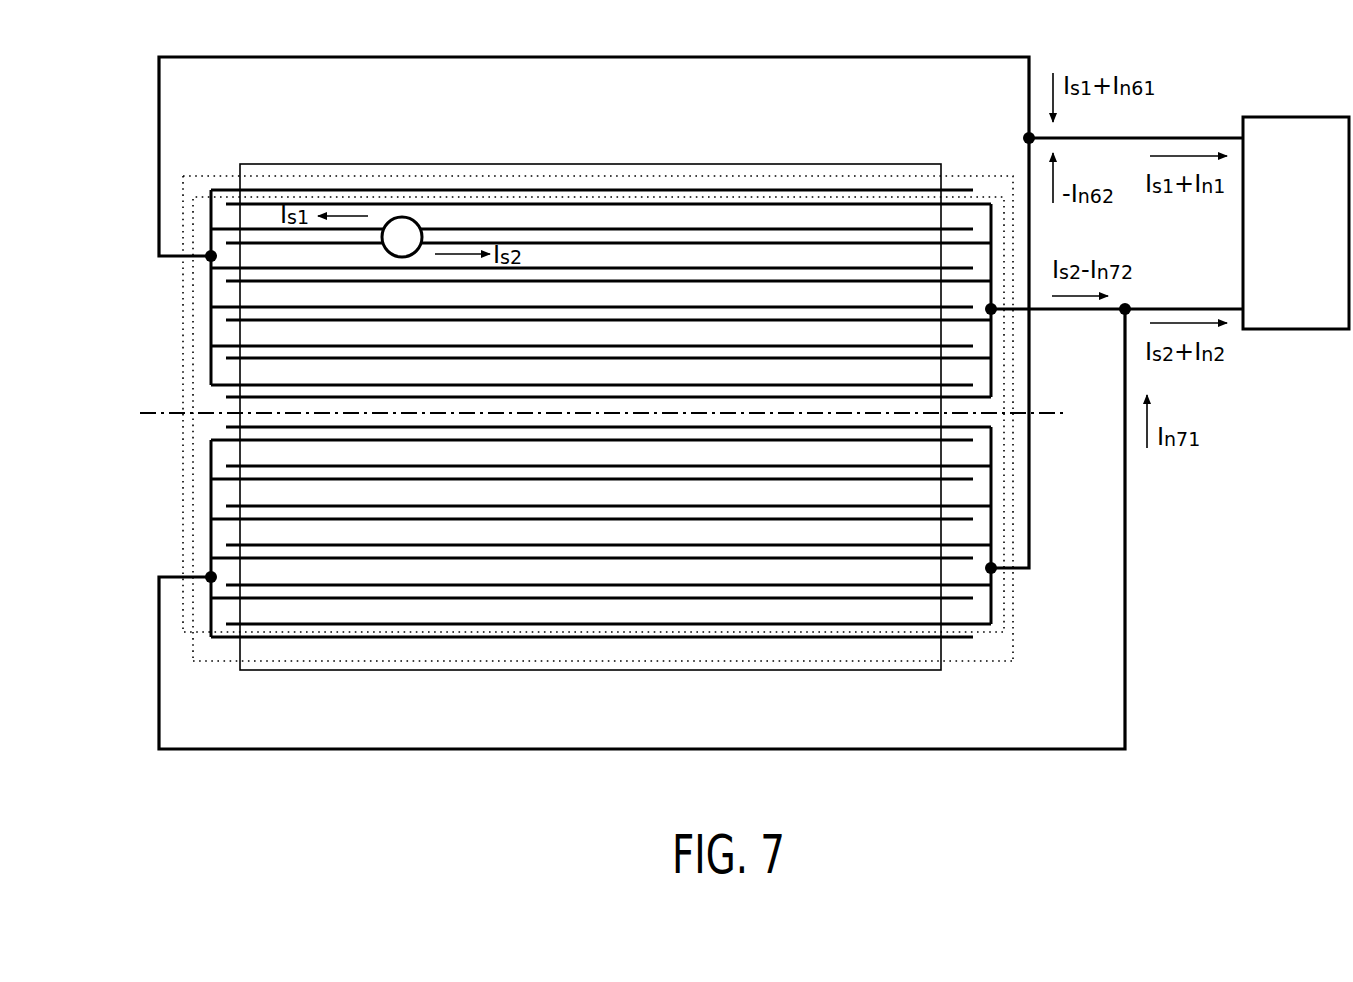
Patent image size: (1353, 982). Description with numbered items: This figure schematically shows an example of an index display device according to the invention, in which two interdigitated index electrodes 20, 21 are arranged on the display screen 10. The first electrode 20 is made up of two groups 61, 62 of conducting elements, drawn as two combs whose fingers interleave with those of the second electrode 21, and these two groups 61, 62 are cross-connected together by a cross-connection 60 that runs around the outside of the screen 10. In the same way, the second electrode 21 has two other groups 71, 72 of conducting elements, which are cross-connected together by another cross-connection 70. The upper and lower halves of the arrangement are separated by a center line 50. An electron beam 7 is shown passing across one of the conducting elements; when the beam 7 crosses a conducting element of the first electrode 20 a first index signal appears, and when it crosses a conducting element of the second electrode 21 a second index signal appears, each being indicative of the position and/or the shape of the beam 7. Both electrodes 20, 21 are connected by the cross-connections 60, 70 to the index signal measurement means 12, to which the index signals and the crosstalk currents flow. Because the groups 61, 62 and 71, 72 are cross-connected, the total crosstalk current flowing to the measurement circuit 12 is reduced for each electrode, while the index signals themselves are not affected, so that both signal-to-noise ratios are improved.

The electron beam 7 is at (402, 237).
The display screen 10 is at (889, 672).
The index signal measurement means 12 is at (1296, 223).
The first index electrode 20 is at (986, 176).
The second index electrode 21 is at (210, 660).
The center line 50 is at (143, 420).
The cross-connection 60 is at (610, 64).
The group of conducting elements 61 is at (208, 327).
The group of conducting elements 62 is at (998, 497).
The cross-connection 70 is at (645, 748).
The group of conducting elements 71 is at (208, 499).
The group of conducting elements 72 is at (998, 345).